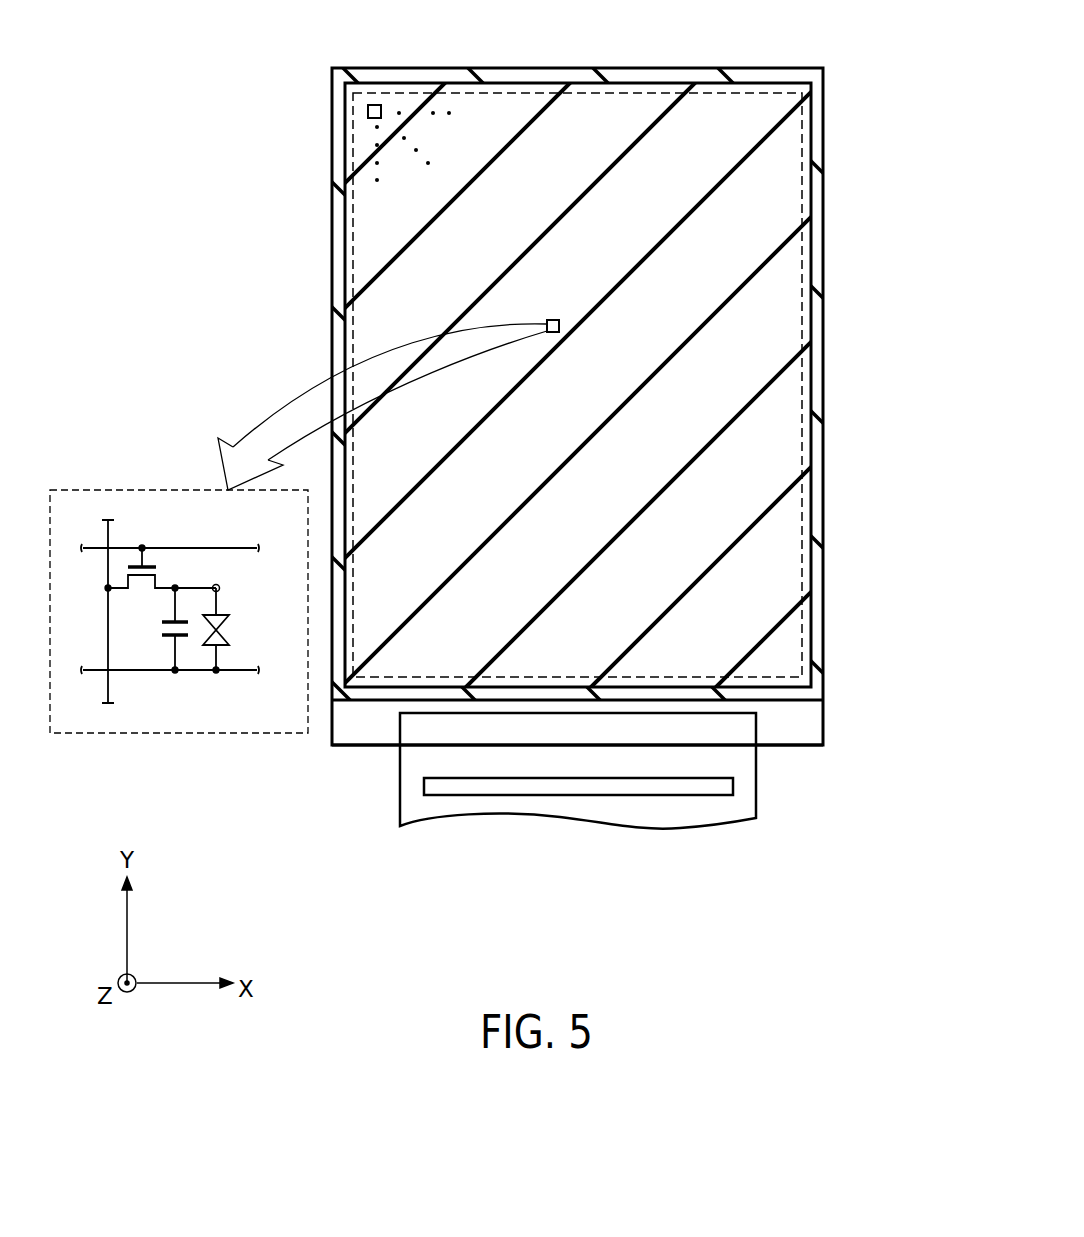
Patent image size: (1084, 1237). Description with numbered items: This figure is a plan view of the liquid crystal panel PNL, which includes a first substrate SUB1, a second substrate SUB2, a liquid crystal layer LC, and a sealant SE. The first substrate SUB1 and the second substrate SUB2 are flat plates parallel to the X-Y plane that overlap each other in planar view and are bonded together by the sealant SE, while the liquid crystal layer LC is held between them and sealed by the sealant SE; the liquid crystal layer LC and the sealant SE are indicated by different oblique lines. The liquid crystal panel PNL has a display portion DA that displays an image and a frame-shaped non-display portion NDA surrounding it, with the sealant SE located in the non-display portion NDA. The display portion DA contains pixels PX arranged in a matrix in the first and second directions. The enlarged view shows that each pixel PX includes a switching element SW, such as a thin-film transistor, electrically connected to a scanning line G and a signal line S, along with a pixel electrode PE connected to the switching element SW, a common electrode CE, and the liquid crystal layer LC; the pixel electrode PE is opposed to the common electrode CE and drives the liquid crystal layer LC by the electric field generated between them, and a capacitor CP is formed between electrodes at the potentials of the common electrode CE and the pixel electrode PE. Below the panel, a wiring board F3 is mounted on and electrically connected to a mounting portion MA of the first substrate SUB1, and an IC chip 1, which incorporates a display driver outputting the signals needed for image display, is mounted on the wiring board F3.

The pixel PX is at (376, 105).
The display portion DA is at (790, 206).
The non-display portion NDA is at (824, 264).
The liquid crystal panel PNL is at (840, 332).
The liquid crystal layer LC is at (788, 388).
The sealant SE is at (813, 457).
The first substrate SUB1 is at (813, 728).
The second substrate SUB2 is at (813, 622).
The mounting portion MA is at (353, 732).
The wiring board F3 is at (716, 810).
The IC chip 1 is at (613, 787).
The scanning line G is at (95, 548).
The signal line S is at (108, 617).
The switching element SW is at (172, 575).
The pixel electrode PE is at (224, 588).
The capacitor CP is at (150, 640).
The common electrode CE is at (233, 672).